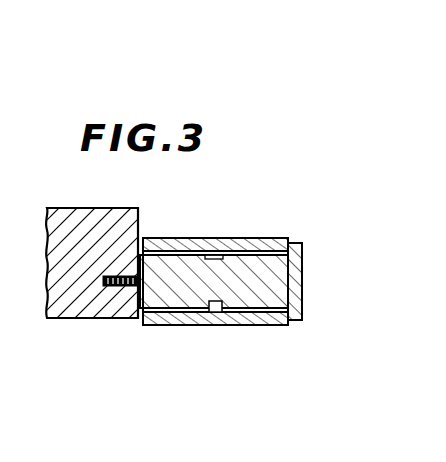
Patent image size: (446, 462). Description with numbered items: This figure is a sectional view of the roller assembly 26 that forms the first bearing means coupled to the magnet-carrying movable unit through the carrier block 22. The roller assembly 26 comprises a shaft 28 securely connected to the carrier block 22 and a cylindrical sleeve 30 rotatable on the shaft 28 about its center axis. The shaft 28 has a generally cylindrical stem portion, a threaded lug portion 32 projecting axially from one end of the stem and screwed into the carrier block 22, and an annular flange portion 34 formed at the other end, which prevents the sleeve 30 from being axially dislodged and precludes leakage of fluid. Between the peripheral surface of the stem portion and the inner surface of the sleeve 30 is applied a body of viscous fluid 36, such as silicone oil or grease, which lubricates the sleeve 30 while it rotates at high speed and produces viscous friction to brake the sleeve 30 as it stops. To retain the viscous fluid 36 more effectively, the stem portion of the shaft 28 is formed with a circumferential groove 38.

The carrier block 22 is at (83, 318).
The roller assembly 26 is at (279, 238).
The shaft 28 is at (182, 266).
The cylindrical sleeve 30 is at (250, 238).
The threaded lug portion 32 is at (122, 287).
The annular flange portion 34 is at (297, 321).
The viscous fluid 36 is at (185, 323).
The circumferential groove 38 is at (216, 313).